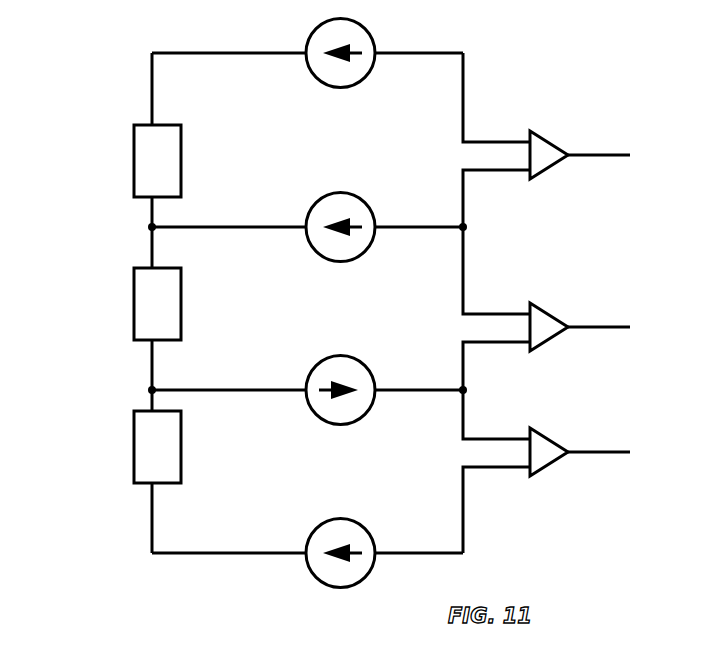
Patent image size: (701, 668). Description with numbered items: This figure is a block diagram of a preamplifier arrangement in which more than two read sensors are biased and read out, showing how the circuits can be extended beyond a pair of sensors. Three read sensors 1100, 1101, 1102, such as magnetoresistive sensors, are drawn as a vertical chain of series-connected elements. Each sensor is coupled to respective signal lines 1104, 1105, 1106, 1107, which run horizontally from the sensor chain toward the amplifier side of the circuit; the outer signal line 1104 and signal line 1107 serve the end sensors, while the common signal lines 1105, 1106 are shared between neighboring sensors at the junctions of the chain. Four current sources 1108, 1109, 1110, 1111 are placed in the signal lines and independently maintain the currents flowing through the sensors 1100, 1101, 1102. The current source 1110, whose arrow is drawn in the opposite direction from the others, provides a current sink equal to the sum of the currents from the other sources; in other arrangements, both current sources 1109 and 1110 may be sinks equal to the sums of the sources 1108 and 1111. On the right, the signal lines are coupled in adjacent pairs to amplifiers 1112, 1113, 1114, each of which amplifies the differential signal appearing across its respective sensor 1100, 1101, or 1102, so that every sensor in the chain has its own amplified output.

The read sensor 1100 is at (133, 157).
The read sensor 1101 is at (133, 300).
The read sensor 1102 is at (133, 440).
The signal line 1104 is at (222, 58).
The common signal line 1105 is at (222, 232).
The common signal line 1106 is at (222, 395).
The signal line 1107 is at (222, 558).
The current source 1108 is at (343, 88).
The current source 1109 is at (343, 262).
The current source 1110 is at (343, 425).
The current source 1111 is at (343, 588).
The amplifier 1112 is at (558, 143).
The amplifier 1113 is at (558, 318).
The amplifier 1114 is at (558, 440).